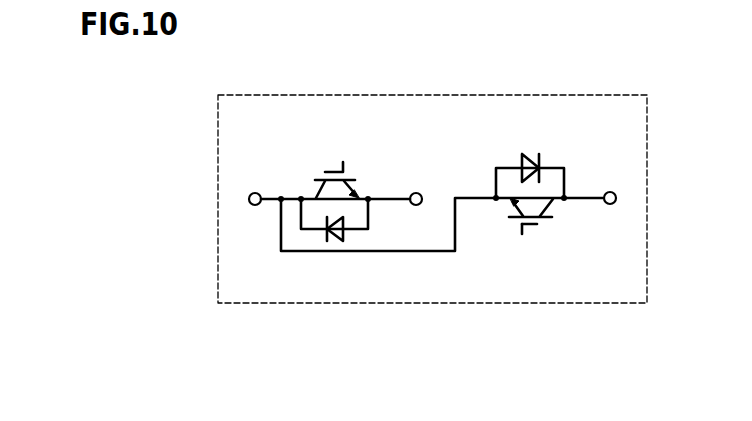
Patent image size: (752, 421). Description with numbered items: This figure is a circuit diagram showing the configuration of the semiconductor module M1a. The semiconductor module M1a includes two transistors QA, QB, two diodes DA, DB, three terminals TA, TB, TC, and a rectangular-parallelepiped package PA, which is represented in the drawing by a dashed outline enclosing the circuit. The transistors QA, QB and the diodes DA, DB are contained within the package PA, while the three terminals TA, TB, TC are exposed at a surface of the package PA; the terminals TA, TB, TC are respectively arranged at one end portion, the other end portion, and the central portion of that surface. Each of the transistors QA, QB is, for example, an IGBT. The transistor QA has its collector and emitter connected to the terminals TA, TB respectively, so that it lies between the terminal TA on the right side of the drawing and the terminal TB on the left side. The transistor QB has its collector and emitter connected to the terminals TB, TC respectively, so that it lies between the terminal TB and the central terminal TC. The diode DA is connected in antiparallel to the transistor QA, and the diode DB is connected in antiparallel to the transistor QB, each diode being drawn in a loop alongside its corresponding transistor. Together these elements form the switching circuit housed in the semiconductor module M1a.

The semiconductor module M1a is at (216, 94).
The package PA is at (430, 305).
The terminal TB is at (254, 191).
The terminal TC is at (416, 191).
The terminal TA is at (610, 205).
The transistor QB is at (336, 164).
The diode DB is at (343, 231).
The diode DA is at (530, 152).
The transistor QA is at (531, 227).